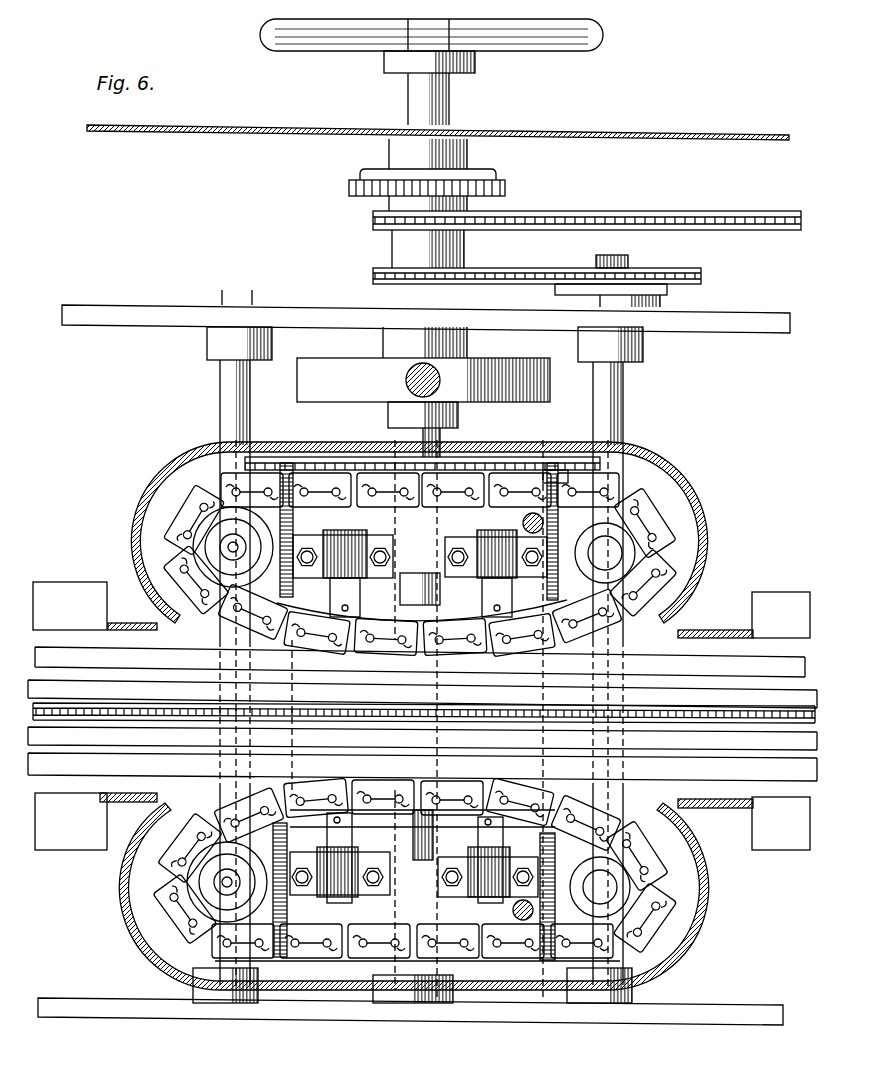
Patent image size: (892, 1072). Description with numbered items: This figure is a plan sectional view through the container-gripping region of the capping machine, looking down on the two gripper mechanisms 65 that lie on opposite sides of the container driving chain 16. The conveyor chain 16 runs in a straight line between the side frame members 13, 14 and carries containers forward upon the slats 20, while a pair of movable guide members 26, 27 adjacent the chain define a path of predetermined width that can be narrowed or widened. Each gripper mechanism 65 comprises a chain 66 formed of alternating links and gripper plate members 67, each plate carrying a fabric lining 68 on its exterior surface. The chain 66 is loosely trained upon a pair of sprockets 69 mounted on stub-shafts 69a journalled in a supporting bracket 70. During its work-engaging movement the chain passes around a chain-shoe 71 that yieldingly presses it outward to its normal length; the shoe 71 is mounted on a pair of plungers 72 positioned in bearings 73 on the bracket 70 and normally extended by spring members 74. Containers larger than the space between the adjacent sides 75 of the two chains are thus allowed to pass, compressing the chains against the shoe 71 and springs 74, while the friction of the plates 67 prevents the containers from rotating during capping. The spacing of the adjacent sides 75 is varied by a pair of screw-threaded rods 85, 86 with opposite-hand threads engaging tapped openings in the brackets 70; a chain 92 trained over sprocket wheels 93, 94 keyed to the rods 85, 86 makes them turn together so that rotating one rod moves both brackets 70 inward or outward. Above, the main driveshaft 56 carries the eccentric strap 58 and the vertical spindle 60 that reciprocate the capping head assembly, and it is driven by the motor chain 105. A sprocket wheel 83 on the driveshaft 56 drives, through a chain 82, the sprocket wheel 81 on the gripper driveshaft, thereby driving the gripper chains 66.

The side frame member 13 is at (318, 1012).
The side frame member 14 is at (288, 306).
The container driving chain 16 is at (690, 710).
The slats 20 is at (170, 690).
The movable guide member 26 is at (65, 583).
The movable guide member 27 is at (72, 847).
The main driveshaft 56 is at (440, 438).
The strap 58 is at (322, 368).
The vertical spindle 60 is at (437, 374).
The gripper mechanism 65 is at (693, 509).
The chain 66 is at (672, 597).
The gripper plate member 67 is at (652, 500).
The fabric lining 68 is at (600, 626).
The sprocket 69 is at (290, 957).
The stub-shaft 69a is at (228, 548).
The supporting bracket 70 is at (415, 575).
The chain-shoe 71 is at (382, 612).
The plunger 72 is at (330, 584).
The bearing 73 is at (365, 893).
The spring member 74 is at (305, 893).
The adjacent sides 75 is at (390, 770).
The sprocket wheel 81 is at (652, 273).
The chain 82 is at (596, 264).
The sprocket wheel 83 is at (372, 268).
The screw-threaded rod 85 is at (540, 838).
The screw-threaded rod 86 is at (326, 840).
The chain 92 is at (505, 457).
The sprocket wheel 93 is at (557, 470).
The sprocket wheel 94 is at (284, 460).
The chain 105 is at (606, 211).